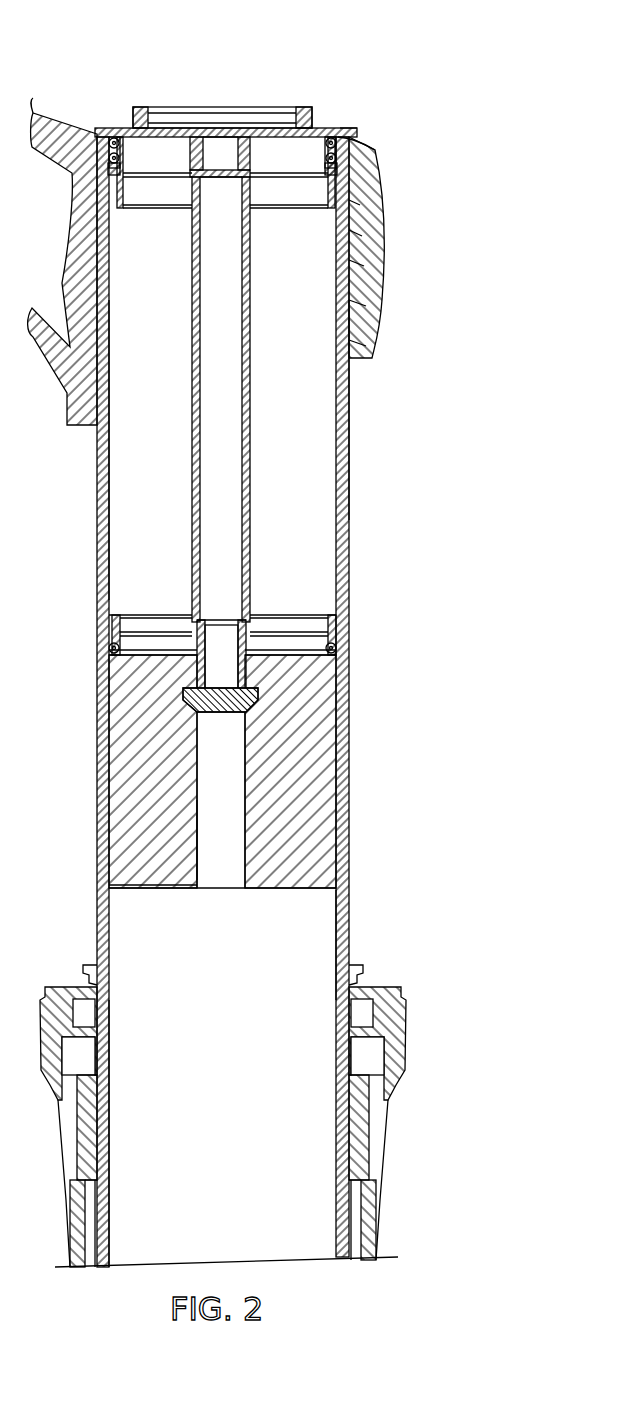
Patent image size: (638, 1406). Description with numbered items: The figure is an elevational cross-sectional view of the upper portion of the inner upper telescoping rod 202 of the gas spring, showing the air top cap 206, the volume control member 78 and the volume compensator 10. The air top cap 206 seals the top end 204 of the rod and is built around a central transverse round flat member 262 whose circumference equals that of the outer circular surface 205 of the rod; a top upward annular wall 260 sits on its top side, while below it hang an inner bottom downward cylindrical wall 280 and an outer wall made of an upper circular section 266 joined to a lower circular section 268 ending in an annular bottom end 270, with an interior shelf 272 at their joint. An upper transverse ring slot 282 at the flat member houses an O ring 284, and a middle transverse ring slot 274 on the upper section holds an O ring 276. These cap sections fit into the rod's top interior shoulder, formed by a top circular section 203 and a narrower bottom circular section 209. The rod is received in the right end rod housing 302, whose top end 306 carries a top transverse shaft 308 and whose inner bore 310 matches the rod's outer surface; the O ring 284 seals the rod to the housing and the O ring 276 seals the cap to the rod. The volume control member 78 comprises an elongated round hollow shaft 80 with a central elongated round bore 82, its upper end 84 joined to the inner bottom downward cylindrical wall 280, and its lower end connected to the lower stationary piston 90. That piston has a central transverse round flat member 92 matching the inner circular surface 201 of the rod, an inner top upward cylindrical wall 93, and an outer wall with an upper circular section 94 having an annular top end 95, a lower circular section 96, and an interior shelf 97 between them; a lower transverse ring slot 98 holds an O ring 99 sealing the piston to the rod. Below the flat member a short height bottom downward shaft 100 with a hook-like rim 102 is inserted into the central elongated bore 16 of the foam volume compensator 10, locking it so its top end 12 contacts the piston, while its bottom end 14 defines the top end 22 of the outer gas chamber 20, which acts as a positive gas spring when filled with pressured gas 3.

The pressured gas 3 is at (230, 848).
The volume compensator 10 is at (138, 898).
The top end 12 is at (140, 668).
The bottom end 14 is at (112, 872).
The central elongated bore 16 is at (237, 773).
The outer gas chamber 20 is at (240, 1230).
The top end 22 is at (313, 913).
The volume control member 78 is at (132, 458).
The elongated round hollow shaft 80 is at (250, 395).
The central elongated round bore 82 is at (237, 483).
The upper end 84 is at (193, 160).
The lower stationary piston 90 is at (135, 600).
The central transverse round flat member 92 is at (112, 657).
The inner top upward cylindrical wall 93 is at (196, 636).
The upper circular section 94 is at (109, 648).
The annular top end 95 is at (125, 632).
The lower circular section 96 is at (110, 632).
The interior shelf 97 is at (120, 615).
The lower transverse ring slot 98 is at (337, 620).
The O ring 99 is at (337, 648).
The short height bottom downward shaft 100 is at (250, 665).
The hook-like rim 102 is at (258, 694).
The inner circular surface 201 is at (340, 450).
The inner upper telescoping rod 202 is at (432, 468).
The top circular section 203 is at (354, 200).
The top end 204 is at (345, 168).
The outer circular surface 205 is at (342, 402).
The air top cap 206 is at (90, 110).
The bottom circular section 209 is at (343, 168).
The top upward annular wall 260 is at (137, 107).
The central transverse round flat member 262 is at (354, 132).
The upper circular section 266 is at (298, 180).
The lower circular section 268 is at (341, 167).
The annular bottom end 270 is at (339, 158).
The interior shelf 272 is at (315, 180).
The middle transverse ring slot 274 is at (286, 140).
The O ring 276 is at (338, 180).
The inner bottom downward cylindrical wall 280 is at (237, 150).
The upper transverse ring slot 282 is at (351, 137).
The O ring 284 is at (333, 138).
The right end rod housing 302 is at (337, 162).
The top end 306 is at (338, 158).
The top transverse shaft 308 is at (338, 143).
The inner bore 310 is at (336, 172).